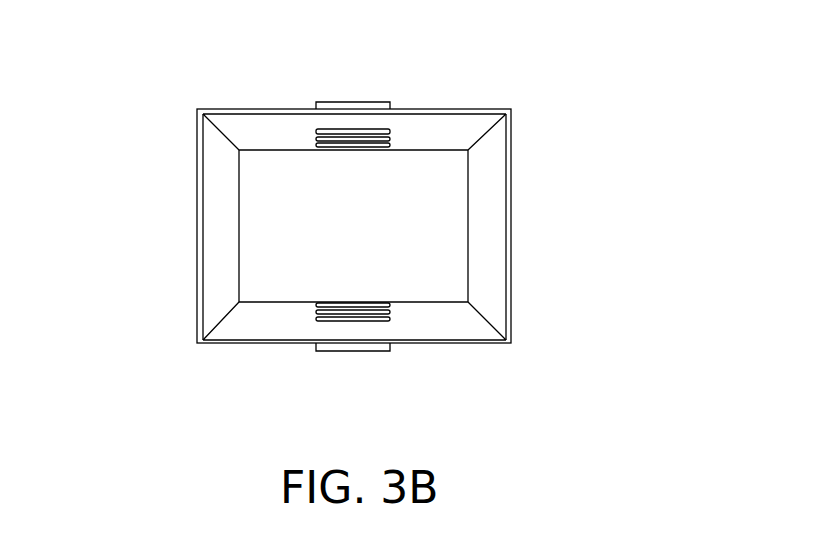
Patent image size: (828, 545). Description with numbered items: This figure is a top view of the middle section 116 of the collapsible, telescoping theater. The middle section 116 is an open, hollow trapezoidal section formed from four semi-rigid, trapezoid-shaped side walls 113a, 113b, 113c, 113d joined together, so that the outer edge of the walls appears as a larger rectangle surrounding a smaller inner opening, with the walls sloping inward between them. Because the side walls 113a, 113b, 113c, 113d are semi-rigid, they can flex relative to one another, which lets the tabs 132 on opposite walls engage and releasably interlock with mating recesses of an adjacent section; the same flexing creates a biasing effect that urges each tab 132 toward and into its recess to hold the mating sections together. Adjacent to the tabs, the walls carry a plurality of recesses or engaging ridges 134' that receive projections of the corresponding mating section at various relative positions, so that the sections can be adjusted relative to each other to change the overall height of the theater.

The middle section 116 is at (494, 92).
The side wall 113a is at (485, 163).
The side wall 113b is at (253, 128).
The side wall 113c is at (217, 158).
The side wall 113d is at (232, 320).
The tab 132 is at (385, 104).
The engaging ridges 134' is at (391, 280).